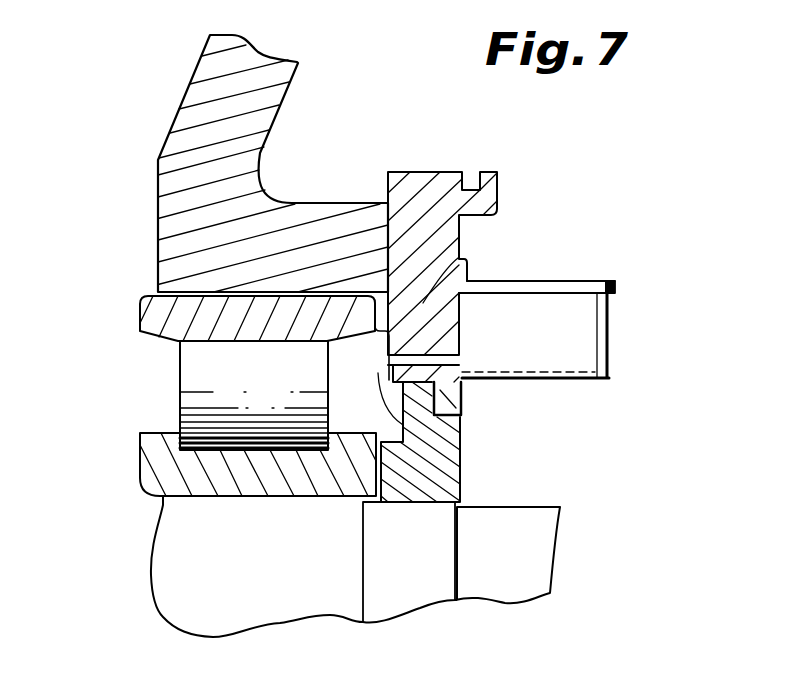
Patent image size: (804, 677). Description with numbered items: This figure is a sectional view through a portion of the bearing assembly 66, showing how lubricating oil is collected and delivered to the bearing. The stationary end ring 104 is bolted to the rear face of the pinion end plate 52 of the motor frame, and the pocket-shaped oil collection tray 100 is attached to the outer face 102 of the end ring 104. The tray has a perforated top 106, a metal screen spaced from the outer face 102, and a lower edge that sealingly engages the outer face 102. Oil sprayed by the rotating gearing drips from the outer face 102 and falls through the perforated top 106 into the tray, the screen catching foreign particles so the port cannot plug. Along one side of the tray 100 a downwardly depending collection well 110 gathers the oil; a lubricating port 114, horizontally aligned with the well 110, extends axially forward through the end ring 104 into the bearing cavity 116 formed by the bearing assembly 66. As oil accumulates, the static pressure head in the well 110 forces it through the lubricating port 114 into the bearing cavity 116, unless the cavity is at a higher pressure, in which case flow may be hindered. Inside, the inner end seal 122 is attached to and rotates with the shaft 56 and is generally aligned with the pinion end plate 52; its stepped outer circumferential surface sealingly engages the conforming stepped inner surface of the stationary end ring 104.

The pinion end plate 52 is at (352, 228).
The shaft 56 is at (281, 580).
The bearing assembly 66 is at (100, 307).
The oil collection tray 100 is at (613, 338).
The outer face 102 is at (461, 333).
The end ring 104 is at (460, 262).
The perforated top 106 is at (600, 281).
The collection well 110 is at (556, 379).
The lubricating port 114 is at (462, 409).
The bearing cavity 116 is at (460, 447).
The inner end seal 122 is at (425, 480).